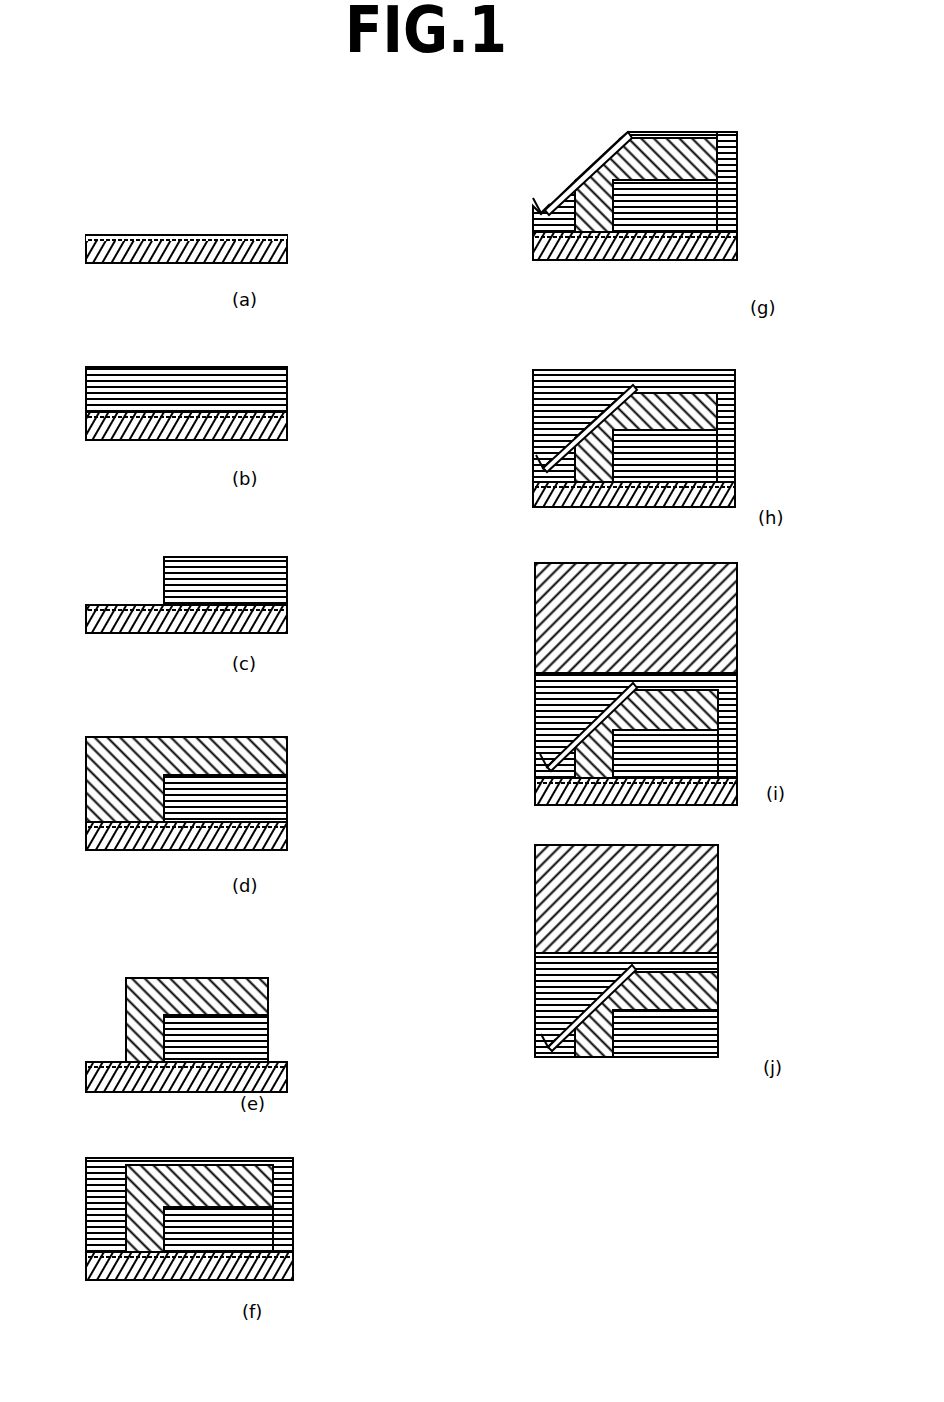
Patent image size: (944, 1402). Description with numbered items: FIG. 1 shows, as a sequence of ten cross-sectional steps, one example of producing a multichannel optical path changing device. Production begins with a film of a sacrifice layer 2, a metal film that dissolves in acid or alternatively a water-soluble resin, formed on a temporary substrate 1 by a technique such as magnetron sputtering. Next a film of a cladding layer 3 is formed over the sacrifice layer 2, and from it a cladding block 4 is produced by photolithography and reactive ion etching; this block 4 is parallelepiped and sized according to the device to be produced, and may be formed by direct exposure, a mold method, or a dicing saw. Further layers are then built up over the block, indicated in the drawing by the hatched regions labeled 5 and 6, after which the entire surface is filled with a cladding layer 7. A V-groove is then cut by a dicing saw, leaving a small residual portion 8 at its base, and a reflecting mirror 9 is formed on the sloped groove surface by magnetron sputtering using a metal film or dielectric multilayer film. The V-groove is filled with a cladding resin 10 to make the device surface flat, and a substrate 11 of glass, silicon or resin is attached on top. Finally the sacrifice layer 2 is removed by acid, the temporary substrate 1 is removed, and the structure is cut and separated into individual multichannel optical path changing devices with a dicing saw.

The temporary substrate 1 is at (279, 263).
The sacrifice layer 2 is at (284, 237).
The cladding layer 3 is at (288, 375).
The cladding block 4 is at (288, 570).
The conductive layer 5 is at (290, 748).
The patterned conductive layer 6 is at (270, 990).
The cladding layer 7 is at (293, 1160).
The residual portion 8 is at (546, 211).
The reflecting mirror 9 is at (616, 140).
The cladding resin 10 is at (580, 388).
The substrate 11 is at (738, 608).